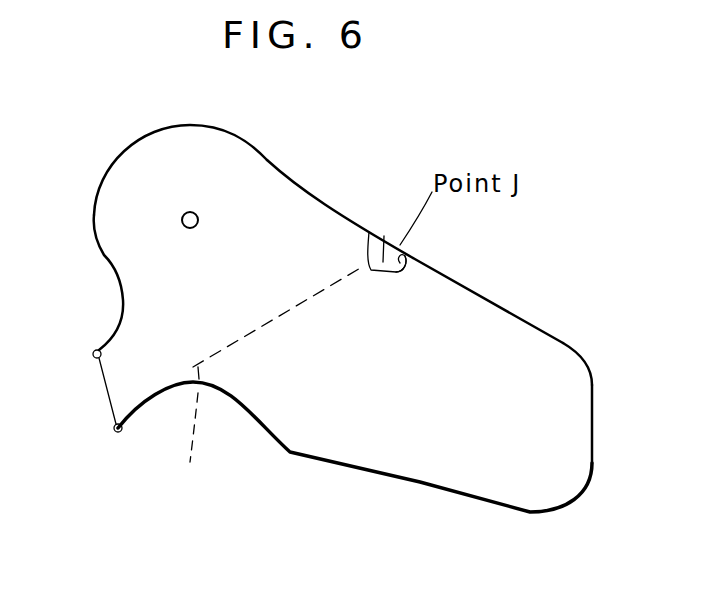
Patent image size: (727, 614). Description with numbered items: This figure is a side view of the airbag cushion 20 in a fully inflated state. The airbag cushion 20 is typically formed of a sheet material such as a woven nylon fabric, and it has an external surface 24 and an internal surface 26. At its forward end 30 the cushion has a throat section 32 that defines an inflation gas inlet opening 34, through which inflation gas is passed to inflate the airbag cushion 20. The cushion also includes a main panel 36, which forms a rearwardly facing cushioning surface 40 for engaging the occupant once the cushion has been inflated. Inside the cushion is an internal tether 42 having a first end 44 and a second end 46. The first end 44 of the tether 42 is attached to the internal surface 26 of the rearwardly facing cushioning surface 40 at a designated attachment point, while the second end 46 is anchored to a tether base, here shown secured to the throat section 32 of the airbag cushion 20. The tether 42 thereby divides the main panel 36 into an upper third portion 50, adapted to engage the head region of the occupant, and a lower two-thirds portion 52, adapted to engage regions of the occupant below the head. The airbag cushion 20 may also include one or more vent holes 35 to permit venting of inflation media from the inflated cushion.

The airbag cushion 20 is at (477, 506).
The external surface 24 is at (517, 313).
The internal surface 26 is at (407, 262).
The forward end 30 is at (112, 439).
The throat section 32 is at (130, 353).
The inflation gas inlet opening 34 is at (102, 377).
The vent hole 35 is at (182, 216).
The main panel 36 is at (247, 130).
The rearwardly facing cushioning surface 40 is at (593, 395).
The internal tether 42 is at (375, 250).
The first end of tether 44 is at (387, 250).
The second end of tether 46 is at (209, 429).
The upper third portion 50 is at (268, 155).
The lower two-thirds portion 52 is at (595, 434).